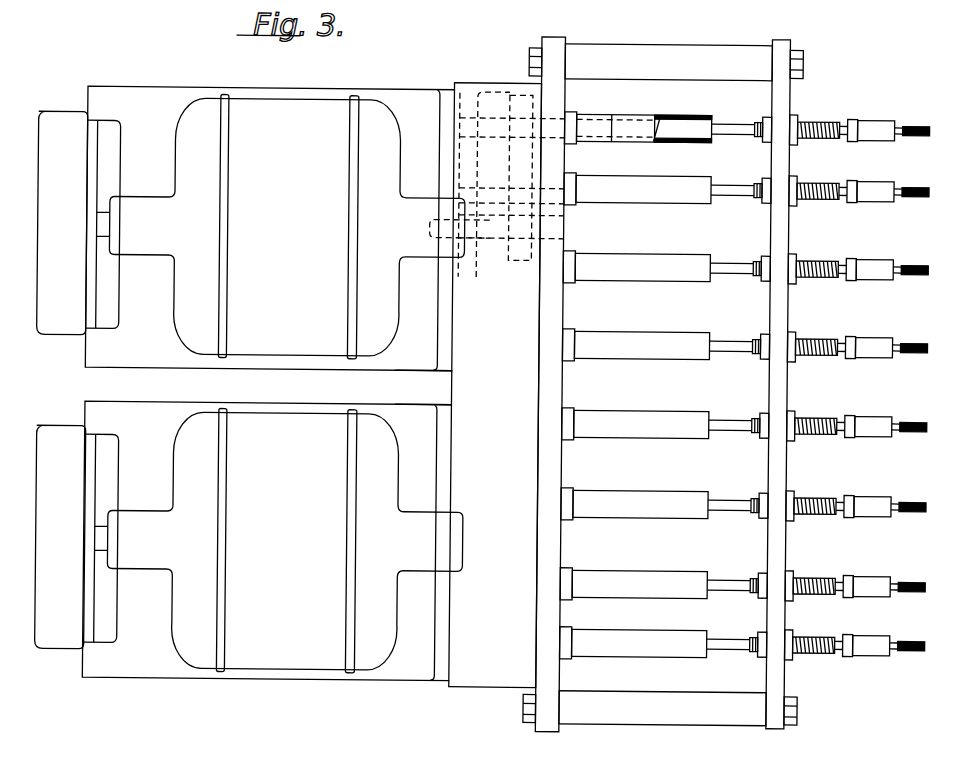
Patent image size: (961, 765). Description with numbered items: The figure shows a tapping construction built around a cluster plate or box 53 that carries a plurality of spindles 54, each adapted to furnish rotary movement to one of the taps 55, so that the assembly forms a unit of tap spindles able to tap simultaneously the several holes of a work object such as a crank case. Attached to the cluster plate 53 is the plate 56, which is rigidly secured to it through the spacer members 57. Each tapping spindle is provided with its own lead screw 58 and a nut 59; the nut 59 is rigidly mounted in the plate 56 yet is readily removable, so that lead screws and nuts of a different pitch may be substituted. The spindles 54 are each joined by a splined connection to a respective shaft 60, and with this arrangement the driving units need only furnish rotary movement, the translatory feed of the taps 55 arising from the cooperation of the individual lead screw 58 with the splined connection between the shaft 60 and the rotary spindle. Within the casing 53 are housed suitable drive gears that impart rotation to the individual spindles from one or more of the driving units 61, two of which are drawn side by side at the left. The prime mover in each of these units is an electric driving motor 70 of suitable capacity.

The cluster plate 53 is at (495, 385).
The spindles 54 is at (667, 425).
The taps 55 is at (916, 268).
The plate 56 is at (770, 228).
The spacer members 57 is at (663, 384).
The lead screw 58 is at (823, 475).
The nut 59 is at (760, 437).
The shaft 60 is at (732, 128).
The driving unit 61 is at (415, 357).
The electric driving motor 70 is at (250, 383).